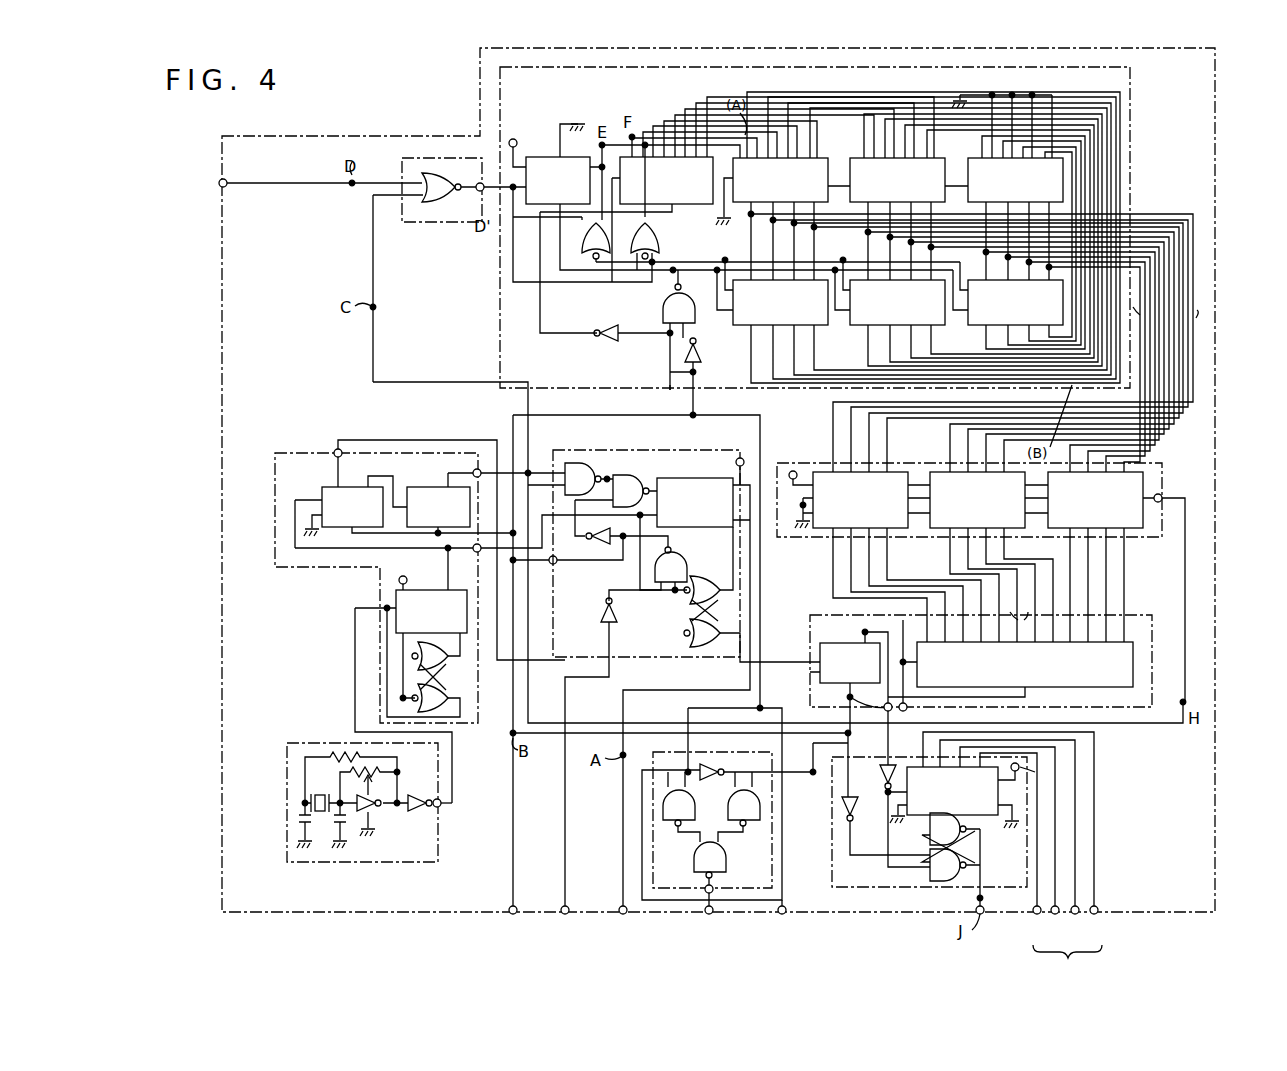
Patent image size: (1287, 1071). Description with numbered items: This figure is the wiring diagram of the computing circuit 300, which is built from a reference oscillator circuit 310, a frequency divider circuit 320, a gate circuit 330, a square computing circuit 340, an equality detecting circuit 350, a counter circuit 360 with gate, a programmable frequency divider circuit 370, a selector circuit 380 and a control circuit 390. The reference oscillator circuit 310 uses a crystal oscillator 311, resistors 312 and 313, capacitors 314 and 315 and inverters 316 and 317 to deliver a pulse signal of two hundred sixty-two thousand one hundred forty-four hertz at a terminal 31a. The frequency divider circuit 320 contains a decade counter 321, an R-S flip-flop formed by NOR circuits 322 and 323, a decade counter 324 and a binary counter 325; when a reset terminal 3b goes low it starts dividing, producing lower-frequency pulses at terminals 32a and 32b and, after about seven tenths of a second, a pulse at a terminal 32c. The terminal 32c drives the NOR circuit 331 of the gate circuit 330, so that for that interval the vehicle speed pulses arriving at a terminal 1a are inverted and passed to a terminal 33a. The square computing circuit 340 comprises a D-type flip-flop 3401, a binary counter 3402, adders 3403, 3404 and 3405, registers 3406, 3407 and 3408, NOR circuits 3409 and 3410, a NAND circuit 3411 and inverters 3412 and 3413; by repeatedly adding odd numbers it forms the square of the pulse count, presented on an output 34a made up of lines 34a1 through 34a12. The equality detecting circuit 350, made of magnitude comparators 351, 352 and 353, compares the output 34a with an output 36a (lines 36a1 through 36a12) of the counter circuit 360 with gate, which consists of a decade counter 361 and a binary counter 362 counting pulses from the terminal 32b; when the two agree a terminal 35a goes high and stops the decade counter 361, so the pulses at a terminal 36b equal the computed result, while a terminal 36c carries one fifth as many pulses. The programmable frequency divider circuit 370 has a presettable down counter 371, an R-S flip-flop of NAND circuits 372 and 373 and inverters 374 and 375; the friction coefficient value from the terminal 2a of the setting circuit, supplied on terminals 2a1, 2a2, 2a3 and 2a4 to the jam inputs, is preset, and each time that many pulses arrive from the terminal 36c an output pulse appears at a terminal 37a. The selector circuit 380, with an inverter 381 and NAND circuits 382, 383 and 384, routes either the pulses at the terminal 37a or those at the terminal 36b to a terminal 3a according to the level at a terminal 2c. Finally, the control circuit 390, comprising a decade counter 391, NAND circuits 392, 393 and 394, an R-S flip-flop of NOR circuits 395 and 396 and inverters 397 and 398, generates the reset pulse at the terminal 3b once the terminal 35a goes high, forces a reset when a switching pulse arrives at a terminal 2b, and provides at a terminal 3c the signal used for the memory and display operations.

The terminal 1a is at (219, 183).
The computing circuit 300 is at (222, 455).
The reference oscillator circuit 310 is at (310, 862).
The crystal oscillator 311 is at (318, 790).
The resistor 312 is at (355, 766).
The resistor 313 is at (345, 752).
The capacitor 314 is at (299, 818).
The capacitor 315 is at (347, 822).
The inverter 316 is at (382, 806).
The inverter 317 is at (428, 795).
The terminal 31a is at (440, 806).
The frequency divider circuit 320 is at (300, 567).
The decade counter 321 is at (445, 596).
The NOR circuit 322 is at (478, 715).
The NOR circuit 323 is at (418, 710).
The decade counter 324 is at (322, 490).
The binary counter 325 is at (432, 487).
The terminal 32a is at (473, 550).
The terminal 32b is at (336, 450).
The terminal 32c is at (478, 469).
The gate circuit 330 is at (405, 222).
The NOR circuit 331 is at (422, 268).
The terminal 33a is at (482, 183).
The square computing circuit 340 is at (500, 320).
The D-type flip-flop 3401 is at (545, 157).
The binary counter 3402 is at (665, 157).
The adder 3403 is at (805, 158).
The adder 3404 is at (935, 158).
The adder 3405 is at (1063, 175).
The register 3406 is at (745, 326).
The register 3407 is at (852, 326).
The register 3408 is at (980, 326).
The NOR circuit 3409 is at (650, 253).
The NOR circuit 3410 is at (580, 238).
The NAND circuit 3411 is at (663, 305).
The inverter 3412 is at (708, 355).
The inverter 3413 is at (600, 342).
The terminal 34a is at (1168, 303).
The line 34a1 is at (1225, 247).
The line 34a12 is at (1190, 262).
The equality detecting circuit 350 is at (830, 463).
The magnitude comparator 351 is at (825, 528).
The magnitude comparator 352 is at (940, 528).
The magnitude comparator 353 is at (1130, 528).
The terminal 35a is at (1160, 497).
The counter circuit with gate 360 is at (815, 615).
The decade counter 361 is at (820, 648).
The binary counter 362 is at (1052, 687).
The output 36a is at (1020, 590).
The line 36a1 is at (930, 600).
The line 36a12 is at (1130, 612).
The terminal 36b is at (851, 762).
The terminal 36c is at (857, 699).
The programmable frequency divider circuit 370 is at (832, 840).
The presettable down counter 371 is at (969, 837).
The NAND circuit 372 is at (969, 858).
The NAND circuit 373 is at (930, 872).
The inverter 374 is at (880, 775).
The inverter 375 is at (855, 820).
The terminal 37a is at (982, 898).
The selector circuit 380 is at (772, 875).
The inverter 381 is at (718, 776).
The NAND circuit 382 is at (674, 826).
The NAND circuit 383 is at (746, 826).
The NAND circuit 384 is at (724, 860).
The control circuit 390 is at (665, 450).
The decade counter 391 is at (702, 478).
The NAND circuit 392 is at (580, 463).
The NAND circuit 393 is at (616, 494).
The NAND circuit 394 is at (683, 560).
The NOR circuit 395 is at (752, 594).
The NOR circuit 396 is at (722, 636).
The inverter 397 is at (606, 600).
The inverter 398 is at (600, 545).
The terminal 2a is at (1067, 962).
The terminal 2a1 is at (1037, 914).
The terminal 2a2 is at (1055, 914).
The terminal 2a3 is at (1075, 914).
The terminal 2a4 is at (1094, 914).
The terminal 2b is at (565, 914).
The terminal 2c is at (782, 914).
The terminal 3a is at (709, 914).
The reset terminal 3b is at (513, 914).
The terminal 3c is at (623, 914).